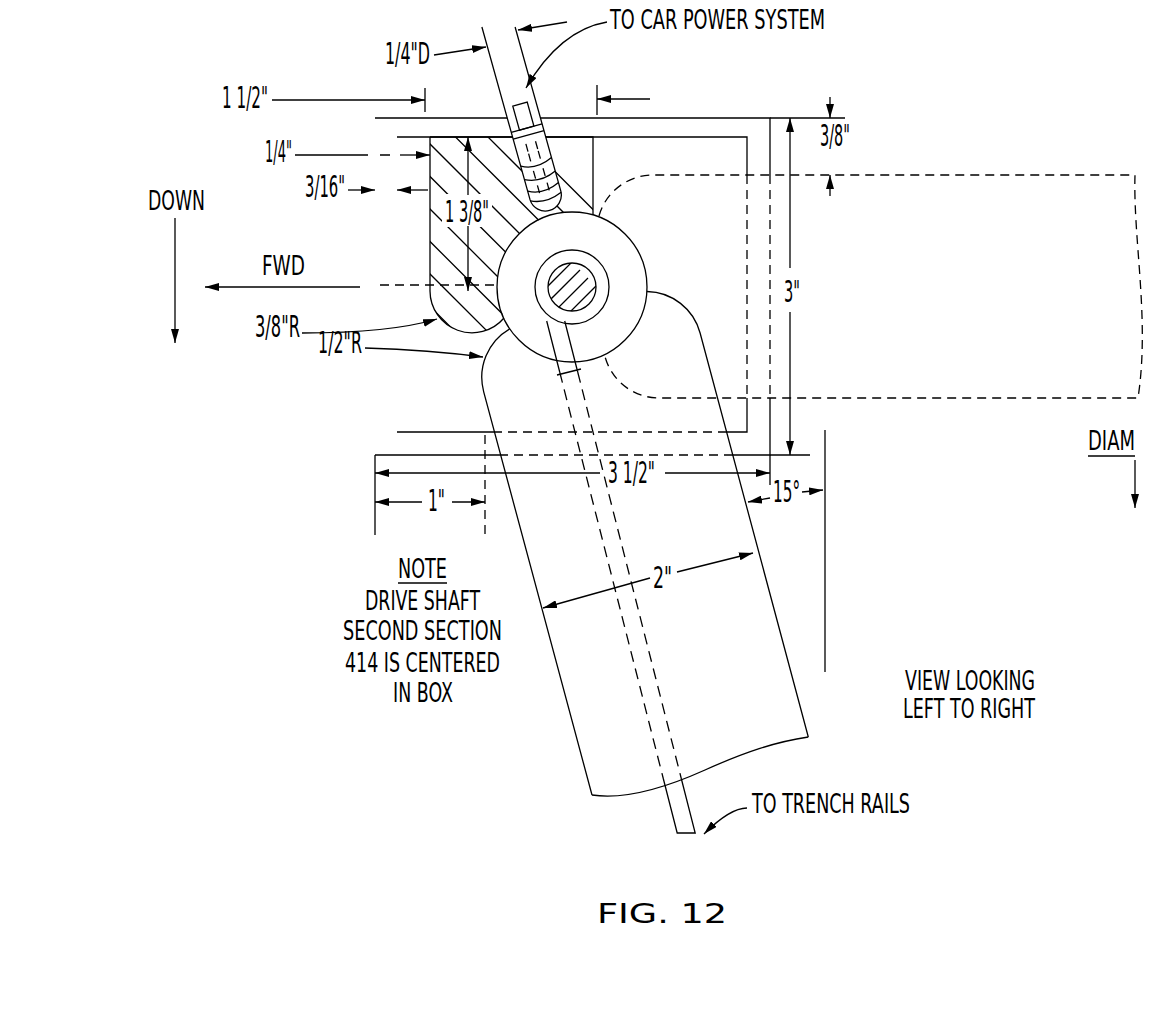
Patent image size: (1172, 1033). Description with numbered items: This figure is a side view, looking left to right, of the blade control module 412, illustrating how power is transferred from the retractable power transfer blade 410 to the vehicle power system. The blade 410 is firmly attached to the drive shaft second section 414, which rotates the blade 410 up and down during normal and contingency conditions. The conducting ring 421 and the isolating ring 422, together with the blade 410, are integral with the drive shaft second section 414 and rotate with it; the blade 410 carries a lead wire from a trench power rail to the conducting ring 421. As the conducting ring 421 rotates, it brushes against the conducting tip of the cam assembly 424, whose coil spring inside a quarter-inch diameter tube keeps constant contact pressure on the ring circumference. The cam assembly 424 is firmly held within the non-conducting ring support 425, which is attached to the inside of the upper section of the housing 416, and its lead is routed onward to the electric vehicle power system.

The retractable power transfer blade 410 is at (574, 771).
The blade control module 412 is at (368, 462).
The drive shaft second section 414 is at (600, 284).
The housing 416 is at (372, 443).
The conducting ring 421 is at (626, 228).
The isolating ring 422 is at (612, 265).
The cam assembly 424 is at (556, 144).
The ring support 425 is at (600, 162).